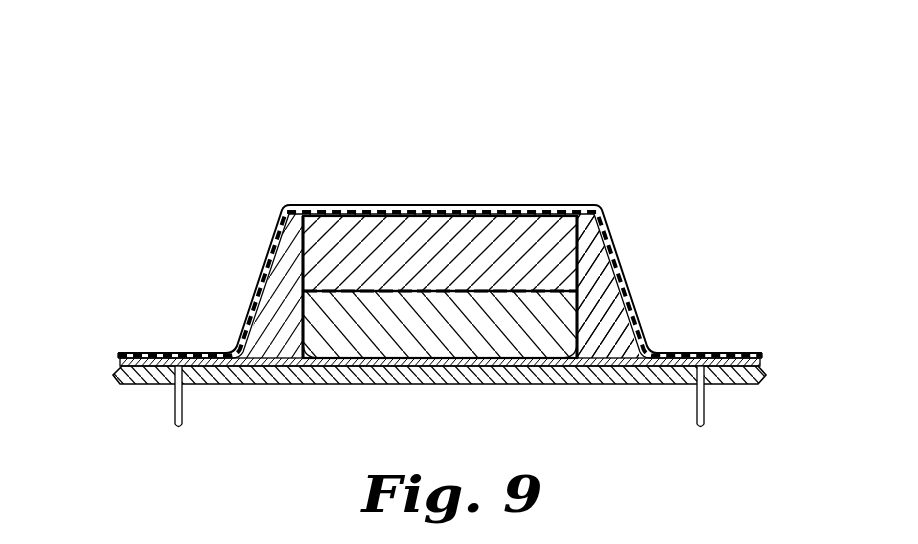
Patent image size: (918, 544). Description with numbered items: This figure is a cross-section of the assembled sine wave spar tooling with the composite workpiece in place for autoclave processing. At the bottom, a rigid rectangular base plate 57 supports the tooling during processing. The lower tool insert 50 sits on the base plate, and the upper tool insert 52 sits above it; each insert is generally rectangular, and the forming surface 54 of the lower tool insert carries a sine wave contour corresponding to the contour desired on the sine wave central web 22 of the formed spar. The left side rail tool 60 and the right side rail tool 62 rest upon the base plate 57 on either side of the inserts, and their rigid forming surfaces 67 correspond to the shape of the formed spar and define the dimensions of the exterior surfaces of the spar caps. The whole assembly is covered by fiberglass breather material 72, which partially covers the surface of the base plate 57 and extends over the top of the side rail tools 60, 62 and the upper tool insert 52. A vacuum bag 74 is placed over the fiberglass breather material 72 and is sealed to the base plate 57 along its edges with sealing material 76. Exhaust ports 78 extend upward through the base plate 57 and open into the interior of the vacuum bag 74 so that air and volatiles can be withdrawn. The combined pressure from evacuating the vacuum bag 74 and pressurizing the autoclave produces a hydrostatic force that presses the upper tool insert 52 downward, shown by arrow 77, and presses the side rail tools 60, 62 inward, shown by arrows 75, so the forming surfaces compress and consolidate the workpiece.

The sine wave central web 22 is at (347, 290).
The lower tool insert 50 is at (385, 338).
The upper tool insert 52 is at (549, 228).
The forming surface 54 is at (464, 366).
The base plate 57 is at (135, 380).
The left side rail tool 60 is at (263, 343).
The right side rail tool 62 is at (603, 313).
The forming surfaces 67 is at (304, 345).
The fiberglass breather material 72 is at (610, 243).
The vacuum bag 74 is at (513, 205).
The arrows 75 is at (490, 166).
The sealing material 76 is at (125, 357).
The arrow 77 is at (455, 118).
The exhaust ports 78 is at (176, 406).